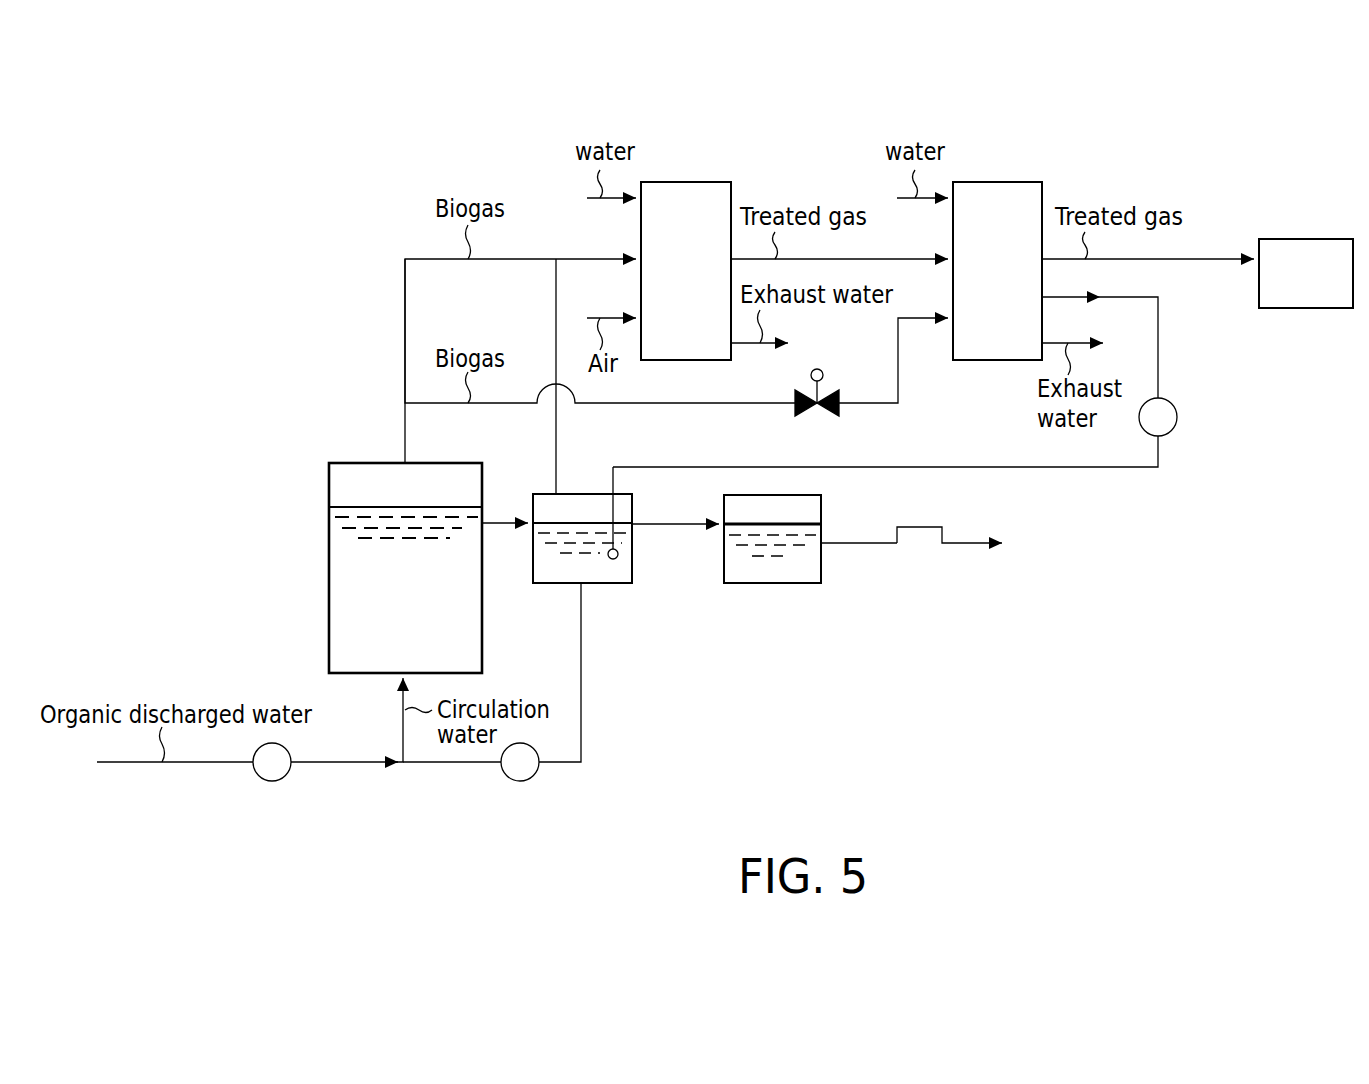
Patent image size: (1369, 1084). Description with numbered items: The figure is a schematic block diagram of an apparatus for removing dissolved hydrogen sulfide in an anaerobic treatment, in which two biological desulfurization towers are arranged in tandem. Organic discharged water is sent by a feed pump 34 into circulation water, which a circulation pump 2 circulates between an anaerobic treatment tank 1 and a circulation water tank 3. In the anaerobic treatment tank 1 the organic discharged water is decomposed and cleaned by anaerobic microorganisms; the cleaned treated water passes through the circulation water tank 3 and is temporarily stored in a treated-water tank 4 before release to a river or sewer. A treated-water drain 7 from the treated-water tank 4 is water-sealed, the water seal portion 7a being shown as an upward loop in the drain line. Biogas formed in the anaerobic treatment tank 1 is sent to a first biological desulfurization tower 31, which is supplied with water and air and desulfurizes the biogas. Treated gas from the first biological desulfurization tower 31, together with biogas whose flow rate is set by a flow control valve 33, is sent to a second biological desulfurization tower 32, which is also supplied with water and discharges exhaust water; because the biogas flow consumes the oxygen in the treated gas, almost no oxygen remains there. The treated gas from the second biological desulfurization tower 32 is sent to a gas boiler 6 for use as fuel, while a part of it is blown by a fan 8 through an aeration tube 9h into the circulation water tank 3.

The anaerobic treatment tank 1 is at (329, 552).
The circulation pump 2 is at (532, 777).
The circulation water tank 3 is at (597, 583).
The treated-water tank 4 is at (763, 583).
The gas boiler 6 is at (1305, 239).
The treated-water drain 7 is at (860, 543).
The water seal portion 7a is at (918, 532).
The fan 8 is at (1177, 417).
The aeration tube 9h is at (616, 559).
The first biological desulfurization tower 31 is at (684, 182).
The second biological desulfurization tower 32 is at (995, 182).
The flow control valve 33 is at (842, 408).
The feed pump 34 is at (278, 778).